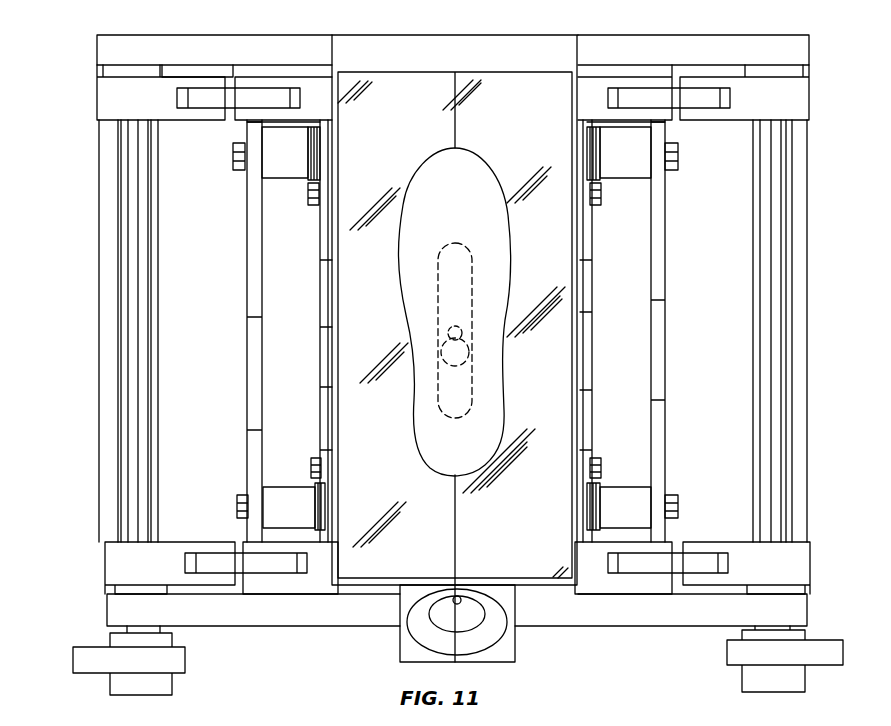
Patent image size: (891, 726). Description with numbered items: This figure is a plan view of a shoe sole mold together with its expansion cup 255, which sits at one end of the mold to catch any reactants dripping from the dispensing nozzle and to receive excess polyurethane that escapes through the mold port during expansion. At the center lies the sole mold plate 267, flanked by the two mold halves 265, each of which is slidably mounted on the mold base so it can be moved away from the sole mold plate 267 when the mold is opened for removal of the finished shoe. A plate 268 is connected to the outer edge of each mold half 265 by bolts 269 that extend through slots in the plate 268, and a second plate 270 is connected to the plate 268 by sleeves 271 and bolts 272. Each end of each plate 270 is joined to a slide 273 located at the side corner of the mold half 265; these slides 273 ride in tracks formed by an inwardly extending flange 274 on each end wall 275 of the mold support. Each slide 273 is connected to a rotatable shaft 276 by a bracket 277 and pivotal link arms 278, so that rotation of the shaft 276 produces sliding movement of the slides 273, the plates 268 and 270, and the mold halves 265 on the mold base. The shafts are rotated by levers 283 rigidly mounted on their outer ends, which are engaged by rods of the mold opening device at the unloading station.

The expansion cup 255 is at (510, 650).
The mold half 265 is at (384, 123).
The sole mold plate 267 is at (497, 360).
The plate 268 is at (325, 388).
The bolts 269 is at (310, 203).
The second plate 270 is at (253, 417).
The sleeves 271 is at (285, 163).
The bolts 272 is at (233, 157).
The slide 273 is at (318, 78).
The inwardly extending flange 274 is at (267, 68).
The end wall 275 is at (97, 50).
The rotatable shaft 276 is at (148, 388).
The bracket 277 is at (177, 550).
The pivotal link arms 278 is at (208, 97).
The levers 283 is at (178, 662).